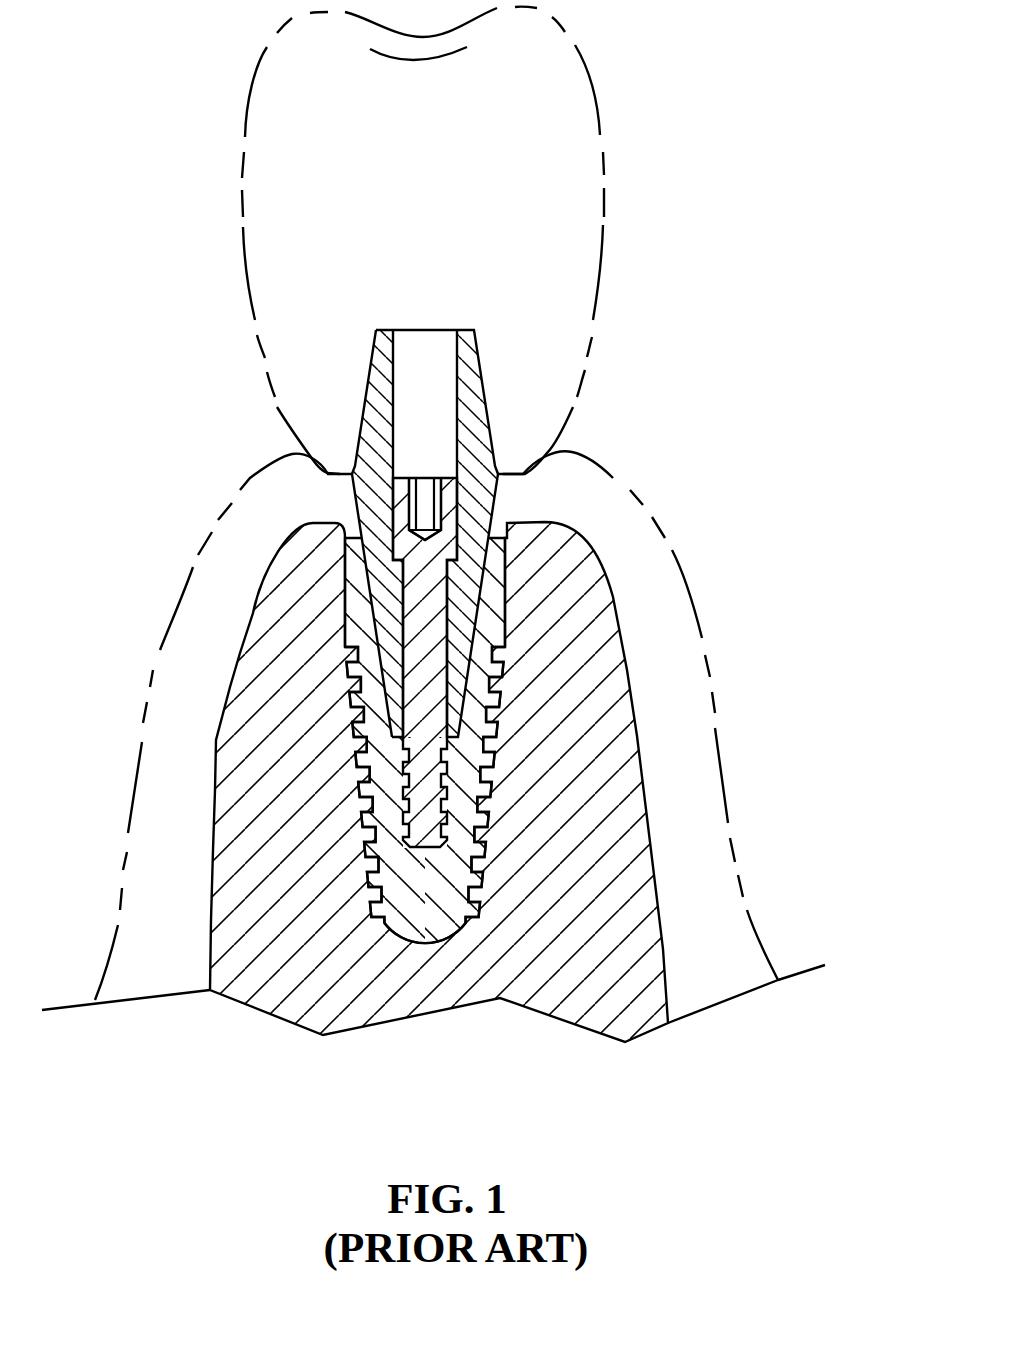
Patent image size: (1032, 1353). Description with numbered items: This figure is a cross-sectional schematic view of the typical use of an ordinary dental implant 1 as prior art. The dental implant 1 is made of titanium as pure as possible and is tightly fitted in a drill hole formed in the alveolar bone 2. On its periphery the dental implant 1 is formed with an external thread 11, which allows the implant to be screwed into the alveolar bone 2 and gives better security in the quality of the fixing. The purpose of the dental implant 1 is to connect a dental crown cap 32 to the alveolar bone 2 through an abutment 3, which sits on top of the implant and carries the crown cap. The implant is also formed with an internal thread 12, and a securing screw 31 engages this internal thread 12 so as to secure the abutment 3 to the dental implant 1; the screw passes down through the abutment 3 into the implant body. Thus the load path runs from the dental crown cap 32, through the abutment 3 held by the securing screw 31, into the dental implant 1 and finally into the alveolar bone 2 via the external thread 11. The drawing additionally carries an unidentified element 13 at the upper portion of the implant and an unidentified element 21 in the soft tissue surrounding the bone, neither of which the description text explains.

The dental implant 1 is at (436, 905).
The external thread 11 is at (362, 814).
The internal thread 12 is at (447, 770).
The implant neck 13 is at (478, 584).
The alveolar bone 2 is at (612, 853).
The gum (gingiva) 21 is at (684, 636).
The abutment 3 is at (470, 362).
The securing screw 31 is at (427, 505).
The dental crown cap 32 is at (565, 125).